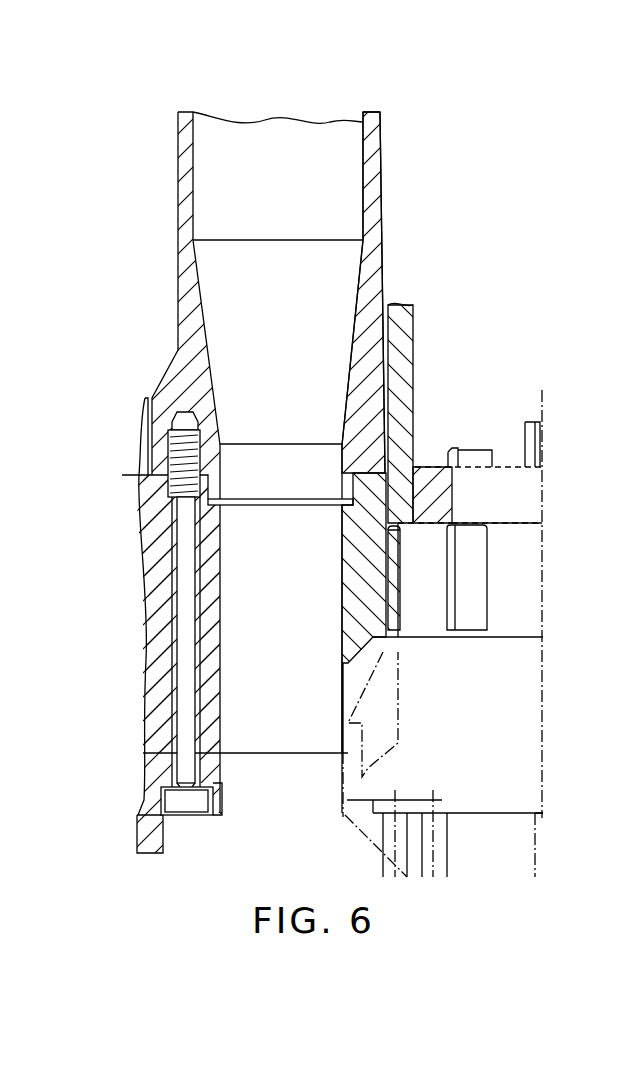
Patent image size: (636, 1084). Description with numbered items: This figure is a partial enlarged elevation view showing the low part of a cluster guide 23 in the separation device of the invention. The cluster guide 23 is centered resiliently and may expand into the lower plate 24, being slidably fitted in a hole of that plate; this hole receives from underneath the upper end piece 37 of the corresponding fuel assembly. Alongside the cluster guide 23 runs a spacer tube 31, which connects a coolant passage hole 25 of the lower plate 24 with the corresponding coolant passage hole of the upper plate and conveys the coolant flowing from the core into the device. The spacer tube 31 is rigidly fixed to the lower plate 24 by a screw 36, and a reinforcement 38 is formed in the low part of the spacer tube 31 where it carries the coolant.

The spacer tube 31 is at (372, 223).
The reinforcement 38 is at (178, 381).
The hole 25 is at (248, 682).
The screw 36 is at (190, 805).
The lower plate 24 is at (373, 490).
The cluster guide 23 is at (438, 457).
The upper end piece 37 is at (390, 716).